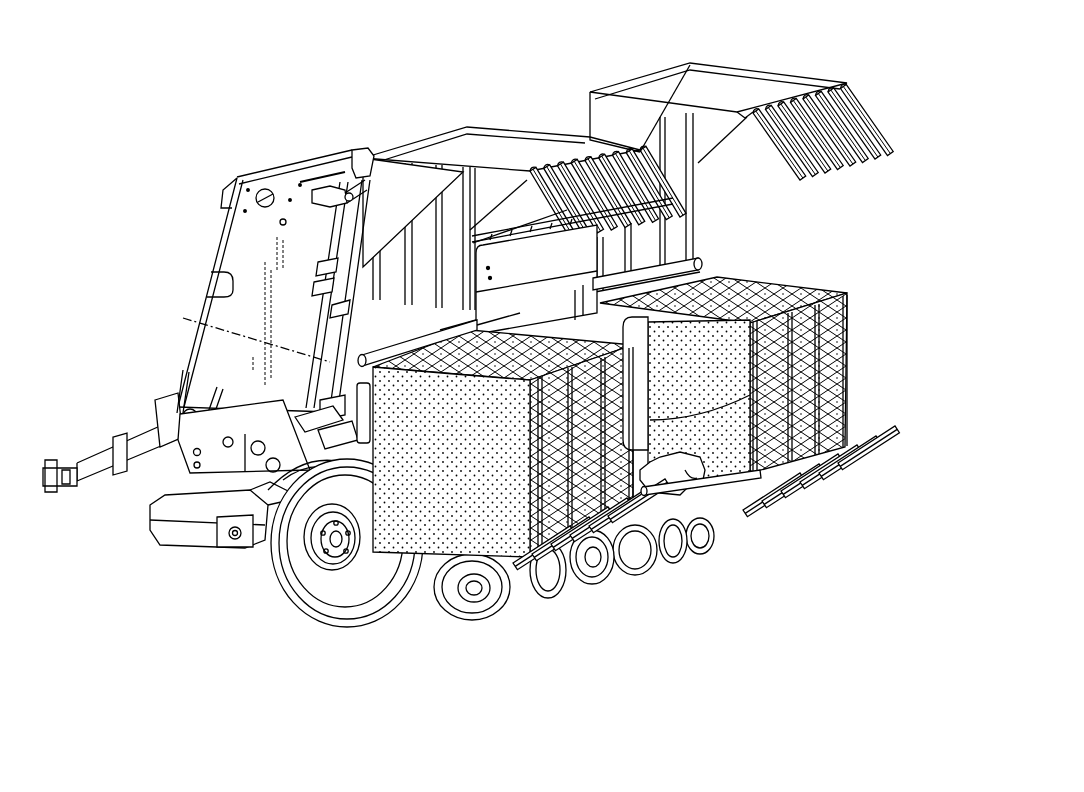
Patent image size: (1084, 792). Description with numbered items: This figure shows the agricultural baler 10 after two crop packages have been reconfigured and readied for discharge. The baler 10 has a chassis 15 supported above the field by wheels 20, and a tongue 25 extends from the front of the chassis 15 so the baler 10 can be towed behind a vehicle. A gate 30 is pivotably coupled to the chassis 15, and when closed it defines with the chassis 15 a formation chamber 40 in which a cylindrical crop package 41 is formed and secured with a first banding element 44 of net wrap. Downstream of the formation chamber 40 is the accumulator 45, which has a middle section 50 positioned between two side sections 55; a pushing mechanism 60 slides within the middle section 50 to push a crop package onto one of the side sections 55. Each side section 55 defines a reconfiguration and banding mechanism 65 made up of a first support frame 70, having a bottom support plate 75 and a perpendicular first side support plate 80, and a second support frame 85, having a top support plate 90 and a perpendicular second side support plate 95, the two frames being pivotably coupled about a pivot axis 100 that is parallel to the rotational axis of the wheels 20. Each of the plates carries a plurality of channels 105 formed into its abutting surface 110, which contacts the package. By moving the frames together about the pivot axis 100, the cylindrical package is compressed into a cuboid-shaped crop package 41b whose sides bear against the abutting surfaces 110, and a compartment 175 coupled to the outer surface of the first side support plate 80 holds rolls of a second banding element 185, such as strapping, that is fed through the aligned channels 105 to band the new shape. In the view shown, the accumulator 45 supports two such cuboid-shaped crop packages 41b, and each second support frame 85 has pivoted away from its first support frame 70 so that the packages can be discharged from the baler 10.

The agricultural baler 10 is at (125, 140).
The chassis 15 is at (243, 225).
The wheels 20 is at (272, 595).
The tongue 25 is at (108, 462).
The gate 30 is at (510, 200).
The formation chamber 40 is at (280, 230).
The crop package 41 is at (888, 308).
The cuboid-shaped crop package 41b is at (677, 381).
The first banding element 44 is at (862, 298).
The accumulator 45 is at (915, 198).
The middle section 50 is at (735, 550).
The side sections 55 is at (848, 525).
The pushing mechanism 60 is at (718, 508).
The reconfiguration and banding mechanism 65 is at (445, 112).
The first support frame 70 is at (870, 480).
The bottom support plate 75 is at (435, 578).
The first side support plate 80 is at (300, 530).
The second support frame 85 is at (548, 118).
The top support plate 90 is at (365, 318).
The second side support plate 95 is at (478, 145).
The pivot axis 100 is at (183, 318).
The channels 105 is at (443, 206).
The abutting surface 110 is at (390, 215).
The compartment 175 is at (220, 505).
The second banding element 185 is at (860, 380).